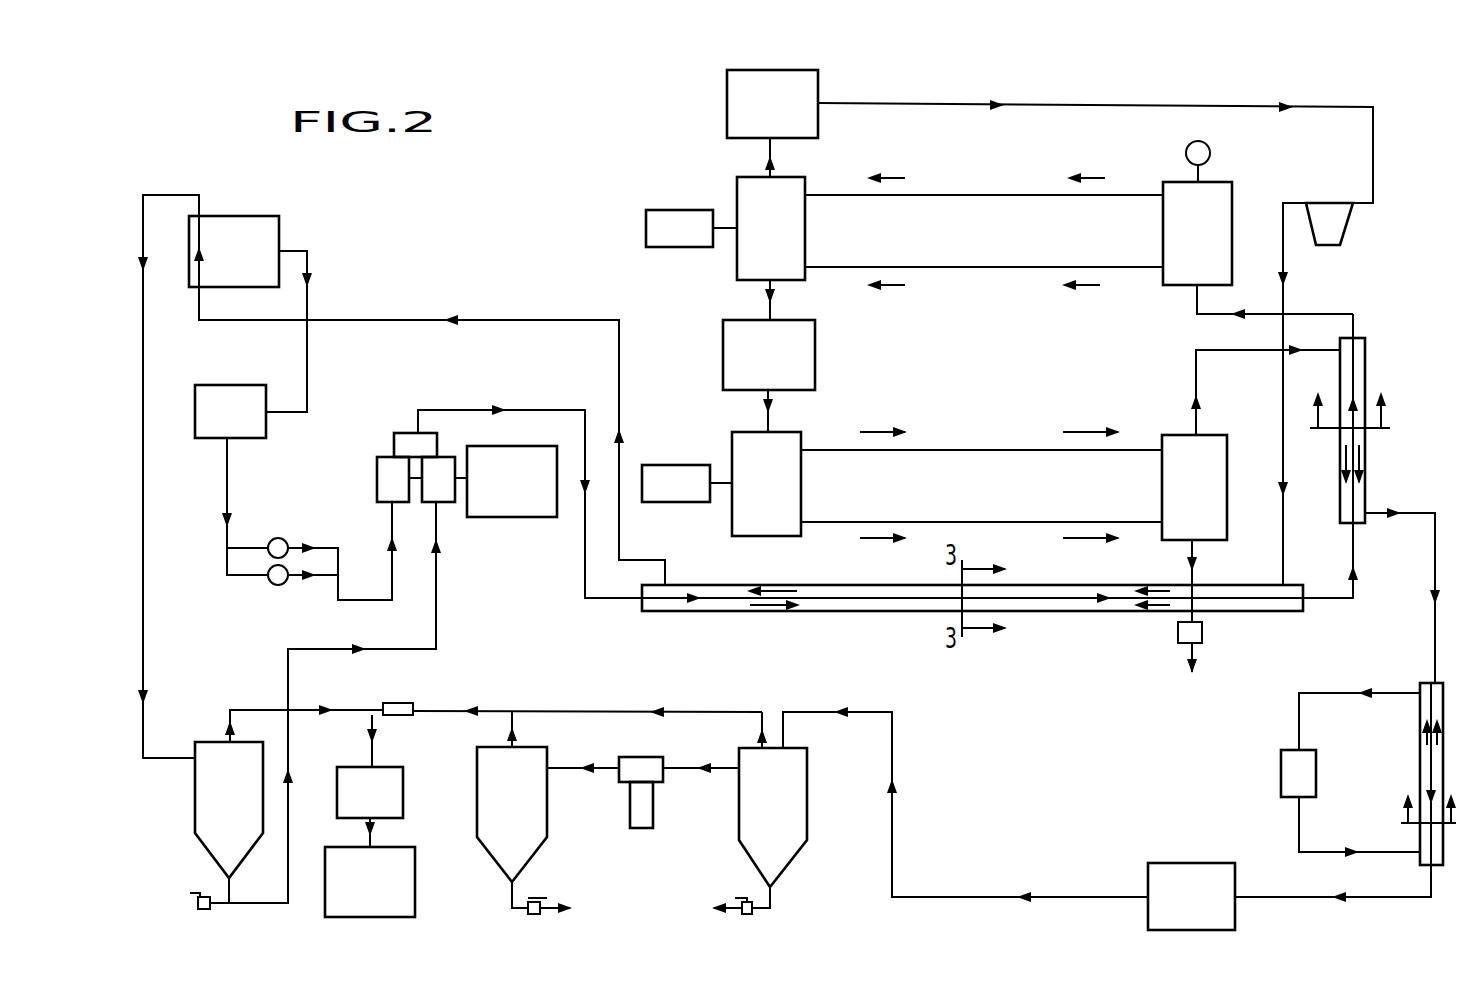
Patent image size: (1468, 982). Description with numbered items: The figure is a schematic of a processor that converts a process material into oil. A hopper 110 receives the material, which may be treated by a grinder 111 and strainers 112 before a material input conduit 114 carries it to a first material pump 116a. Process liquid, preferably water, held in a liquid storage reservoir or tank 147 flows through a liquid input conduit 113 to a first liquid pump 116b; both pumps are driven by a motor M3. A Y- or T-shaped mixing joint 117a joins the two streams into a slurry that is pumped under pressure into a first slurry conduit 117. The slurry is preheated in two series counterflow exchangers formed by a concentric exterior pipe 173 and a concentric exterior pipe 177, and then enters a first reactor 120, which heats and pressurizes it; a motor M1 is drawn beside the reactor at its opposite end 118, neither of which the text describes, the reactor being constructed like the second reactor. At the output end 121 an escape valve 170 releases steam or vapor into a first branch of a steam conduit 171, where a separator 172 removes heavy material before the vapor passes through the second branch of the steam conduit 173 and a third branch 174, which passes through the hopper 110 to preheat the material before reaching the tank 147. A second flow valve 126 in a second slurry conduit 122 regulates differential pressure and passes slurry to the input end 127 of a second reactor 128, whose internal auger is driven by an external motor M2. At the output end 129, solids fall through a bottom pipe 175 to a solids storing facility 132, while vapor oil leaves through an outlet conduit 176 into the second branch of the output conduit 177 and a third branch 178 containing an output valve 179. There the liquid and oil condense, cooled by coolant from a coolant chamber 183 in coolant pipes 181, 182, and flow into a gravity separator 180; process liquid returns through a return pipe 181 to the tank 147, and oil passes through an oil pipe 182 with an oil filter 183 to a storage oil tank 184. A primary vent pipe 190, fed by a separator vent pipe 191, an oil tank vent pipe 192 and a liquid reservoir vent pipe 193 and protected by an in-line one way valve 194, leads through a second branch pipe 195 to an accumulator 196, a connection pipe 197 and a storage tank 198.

The hopper 110 is at (246, 227).
The grinder 111 is at (245, 427).
The strainers 112 is at (283, 540).
The liquid input conduit 113 is at (456, 447).
The material input conduit 114 is at (307, 312).
The first material pump 116a is at (378, 478).
The first liquid pump 116b is at (444, 500).
The first slurry conduit 117 is at (447, 410).
The mixing joint 117a is at (405, 426).
The hopper 118 is at (1183, 292).
The first reactor 120 is at (1000, 212).
The output end 121 is at (812, 276).
The second slurry conduit 122 is at (772, 312).
The second flow valve 126 is at (725, 352).
The input end 127 is at (786, 429).
The second reactor 128 is at (960, 465).
The output end 129 is at (1182, 428).
The solids storing facility 132 is at (1202, 632).
The liquid storage reservoir or tank 147 is at (208, 788).
The escape valve 170 is at (733, 92).
The first branch of steam conduit 171 is at (1080, 107).
The separator 172 is at (1333, 228).
The second branch of steam conduit 173 is at (830, 602).
The third branch of steam conduit 174 is at (168, 194).
The bottom pipe 175 is at (1195, 552).
The outlet conduit 176 is at (1228, 352).
The second branch of output conduit 177 is at (1365, 378).
The third branch of output conduit 178 is at (1375, 510).
The output valve 179 is at (1192, 862).
The gravity separator 180 is at (797, 812).
The return pipe 181 is at (1330, 696).
The oil pipe 182 is at (557, 766).
The oil filter 183 is at (645, 800).
The storage oil tank 184 is at (537, 800).
The primary vent pipe 190 is at (595, 712).
The separator vent pipe 191 is at (765, 725).
The oil tank vent pipe 192 is at (522, 716).
The liquid reservoir vent pipe 193 is at (256, 705).
The in-line one way valve 194 is at (400, 703).
The second branch pipe 195 is at (375, 765).
The accumulator 196 is at (397, 785).
The connection pipe 197 is at (372, 838).
The storage tank 198 is at (400, 893).
The motor M1 is at (658, 232).
The external motor M2 is at (672, 488).
The motor M3 is at (530, 498).